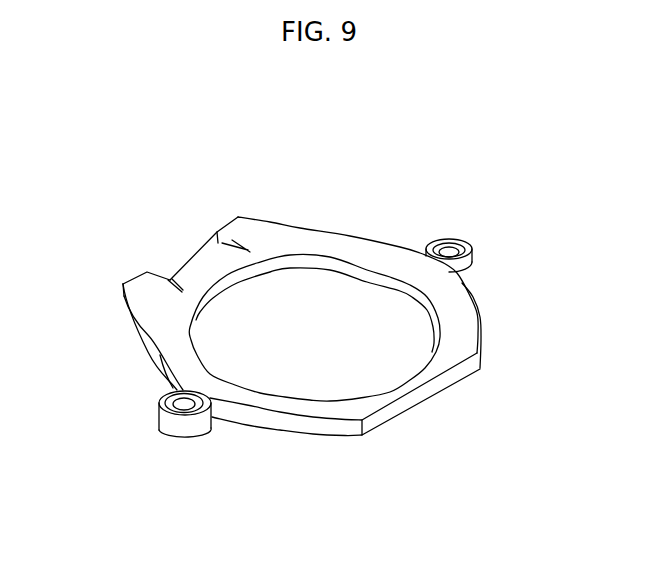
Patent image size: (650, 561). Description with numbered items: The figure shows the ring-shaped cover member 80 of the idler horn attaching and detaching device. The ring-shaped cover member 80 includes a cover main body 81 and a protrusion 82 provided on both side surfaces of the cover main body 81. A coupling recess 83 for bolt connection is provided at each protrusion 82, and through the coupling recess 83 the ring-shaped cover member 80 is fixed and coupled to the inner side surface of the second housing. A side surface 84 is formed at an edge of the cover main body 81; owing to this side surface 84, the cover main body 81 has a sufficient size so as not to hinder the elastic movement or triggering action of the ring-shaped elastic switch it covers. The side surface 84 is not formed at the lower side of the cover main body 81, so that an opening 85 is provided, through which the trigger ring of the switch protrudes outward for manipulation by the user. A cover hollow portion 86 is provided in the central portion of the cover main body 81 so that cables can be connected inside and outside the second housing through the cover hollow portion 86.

The ring-shaped cover member 80 is at (321, 319).
The cover main body 81 is at (270, 242).
The protrusion 82 is at (172, 428).
The coupling recess 83 is at (183, 407).
The side surface 84 is at (148, 336).
The opening 85 is at (373, 415).
The cover hollow portion 86 is at (367, 347).